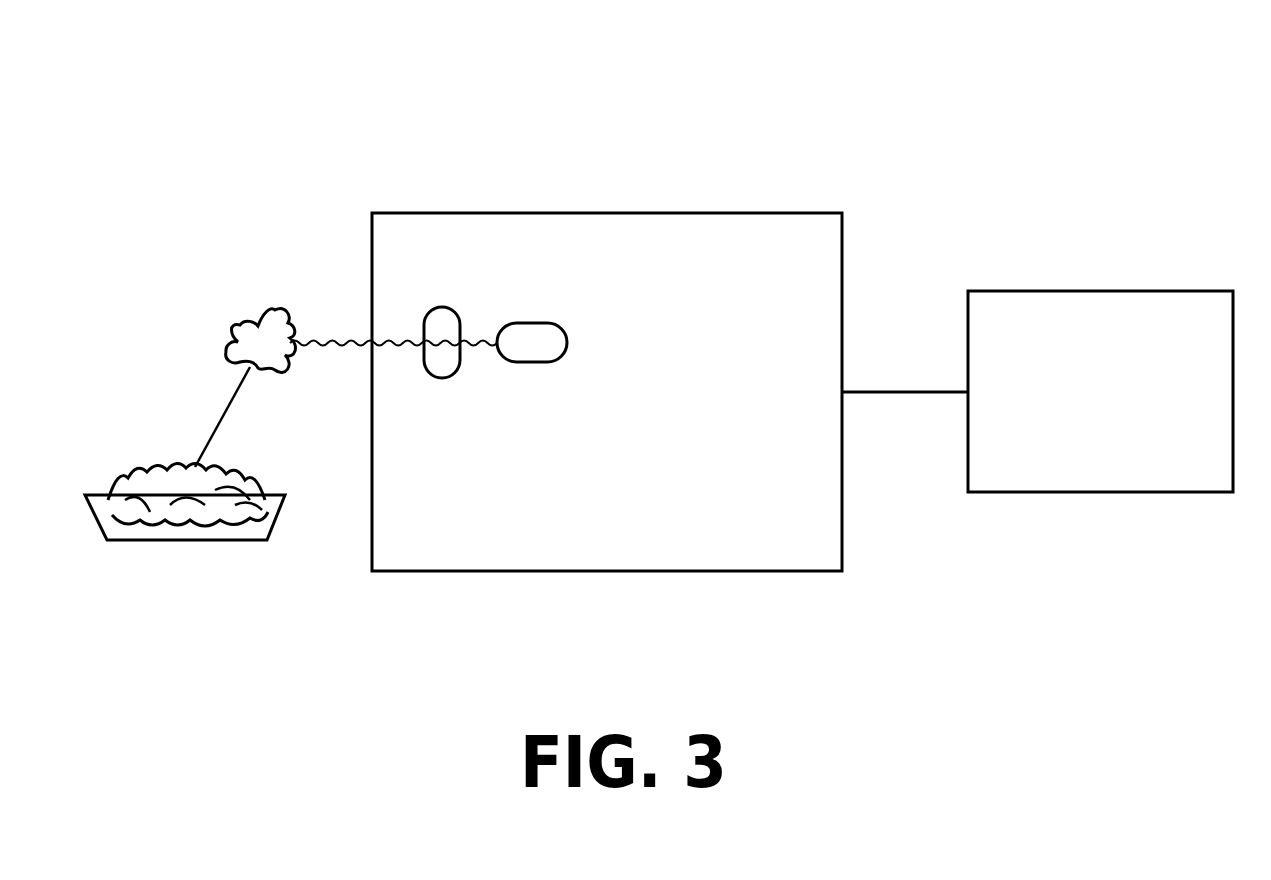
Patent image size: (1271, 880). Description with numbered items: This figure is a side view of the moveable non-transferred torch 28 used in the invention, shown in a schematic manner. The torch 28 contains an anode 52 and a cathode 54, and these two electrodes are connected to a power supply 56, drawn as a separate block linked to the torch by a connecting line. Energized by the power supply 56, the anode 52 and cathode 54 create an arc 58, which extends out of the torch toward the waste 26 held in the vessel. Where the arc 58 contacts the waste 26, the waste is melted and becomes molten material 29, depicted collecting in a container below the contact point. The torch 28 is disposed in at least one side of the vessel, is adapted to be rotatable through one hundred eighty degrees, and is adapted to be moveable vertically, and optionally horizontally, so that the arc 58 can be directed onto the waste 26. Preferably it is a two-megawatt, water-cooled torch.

The waste 26 is at (263, 337).
The moveable non-transferred torch 28 is at (738, 213).
The molten material 29 is at (192, 530).
The anode 52 is at (440, 307).
The cathode 54 is at (533, 323).
The power supply 56 is at (1095, 291).
The arc 58 is at (338, 337).